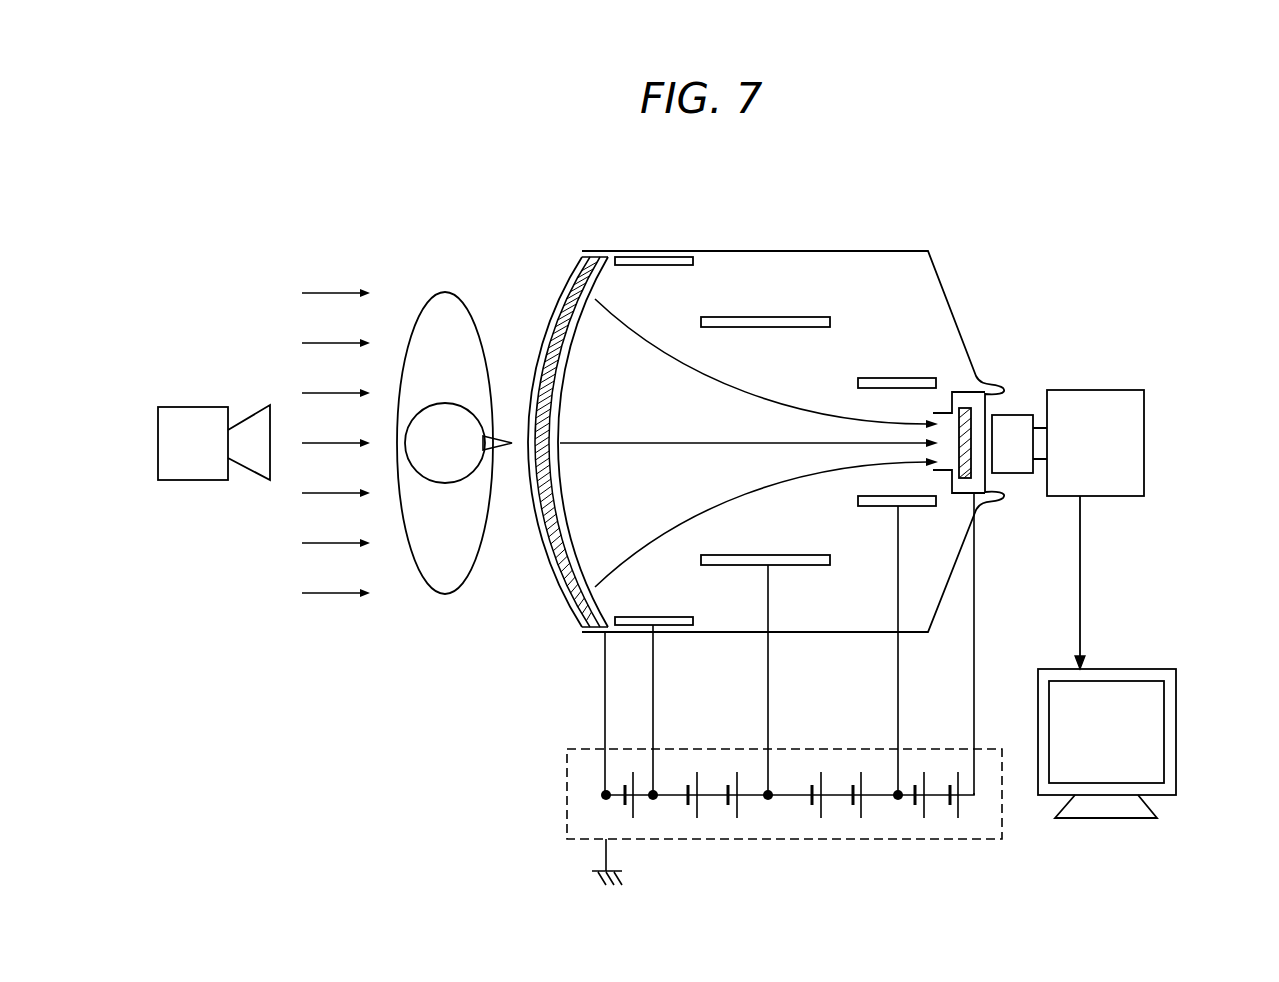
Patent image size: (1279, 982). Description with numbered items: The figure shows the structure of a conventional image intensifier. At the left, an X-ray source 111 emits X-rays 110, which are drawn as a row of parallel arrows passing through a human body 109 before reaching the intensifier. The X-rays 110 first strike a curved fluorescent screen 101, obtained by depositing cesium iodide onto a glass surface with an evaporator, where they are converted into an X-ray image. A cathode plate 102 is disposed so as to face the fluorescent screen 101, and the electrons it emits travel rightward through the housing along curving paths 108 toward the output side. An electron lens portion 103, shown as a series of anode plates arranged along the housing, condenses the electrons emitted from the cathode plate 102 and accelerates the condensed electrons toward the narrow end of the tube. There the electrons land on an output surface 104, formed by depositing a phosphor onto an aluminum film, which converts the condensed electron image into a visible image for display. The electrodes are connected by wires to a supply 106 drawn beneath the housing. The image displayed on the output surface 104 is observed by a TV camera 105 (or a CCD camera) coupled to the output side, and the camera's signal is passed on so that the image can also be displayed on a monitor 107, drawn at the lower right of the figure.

The fluorescent screen 101 is at (568, 278).
The cathode plate 102 is at (608, 257).
The electron lens portion 103 is at (752, 317).
The output surface 104 is at (970, 440).
The TV camera 105 is at (1144, 418).
The power supply 106 is at (567, 783).
The monitor 107 is at (1176, 700).
The photoelectron trajectory 108 is at (612, 443).
The human body 109 is at (449, 291).
The X-rays 110 is at (329, 270).
The X-ray source 111 is at (190, 482).